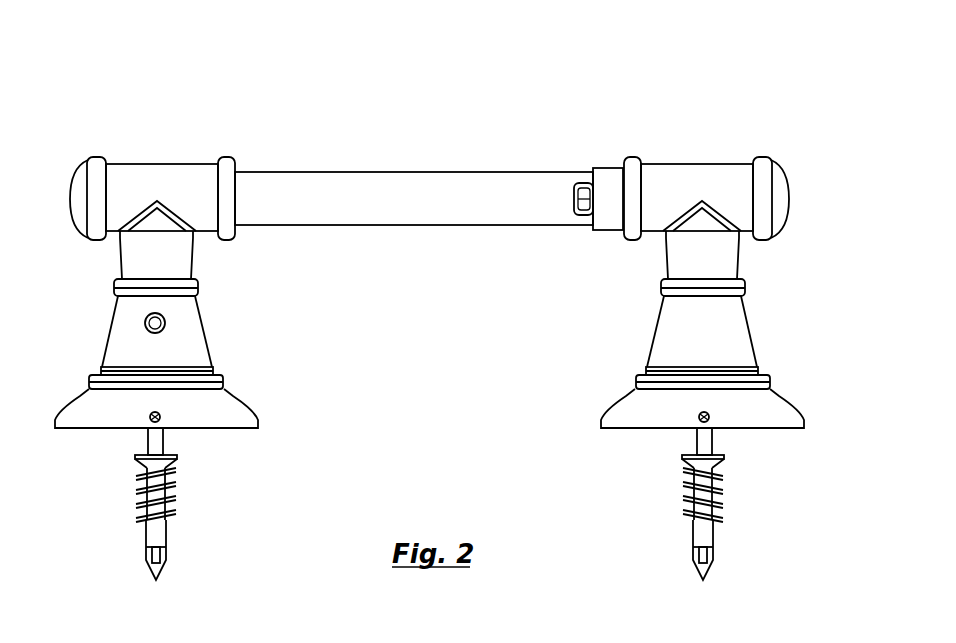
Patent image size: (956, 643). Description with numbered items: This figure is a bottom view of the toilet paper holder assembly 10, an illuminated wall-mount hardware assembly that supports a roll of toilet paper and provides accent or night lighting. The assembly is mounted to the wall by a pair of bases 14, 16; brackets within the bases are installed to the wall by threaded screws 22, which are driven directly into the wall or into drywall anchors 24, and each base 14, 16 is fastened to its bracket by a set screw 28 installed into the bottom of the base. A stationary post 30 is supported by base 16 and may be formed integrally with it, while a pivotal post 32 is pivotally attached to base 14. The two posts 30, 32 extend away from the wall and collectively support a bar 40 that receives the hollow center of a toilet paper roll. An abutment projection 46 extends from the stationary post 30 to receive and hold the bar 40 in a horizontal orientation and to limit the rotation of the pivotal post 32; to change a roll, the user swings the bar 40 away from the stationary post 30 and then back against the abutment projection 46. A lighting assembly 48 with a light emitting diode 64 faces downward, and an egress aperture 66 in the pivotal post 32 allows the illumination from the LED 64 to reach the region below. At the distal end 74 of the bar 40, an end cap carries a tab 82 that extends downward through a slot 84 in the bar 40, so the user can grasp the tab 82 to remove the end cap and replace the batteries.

The toilet paper holder assembly 10 is at (620, 85).
The base 14 is at (80, 395).
The base 16 is at (620, 398).
The screw 22 is at (148, 437).
The drywall anchor 24 is at (147, 525).
The set screw 28 is at (150, 418).
The stationary post 30 is at (752, 352).
The pivotal post 32 is at (108, 338).
The bar 40 is at (267, 180).
The abutment projection 46 is at (612, 180).
The lighting assembly 48 is at (180, 311).
The light emitting diode 64 is at (167, 325).
The egress aperture 66 is at (157, 335).
The distal end 74 is at (588, 180).
The tab 82 is at (577, 187).
The slot 84 is at (580, 215).